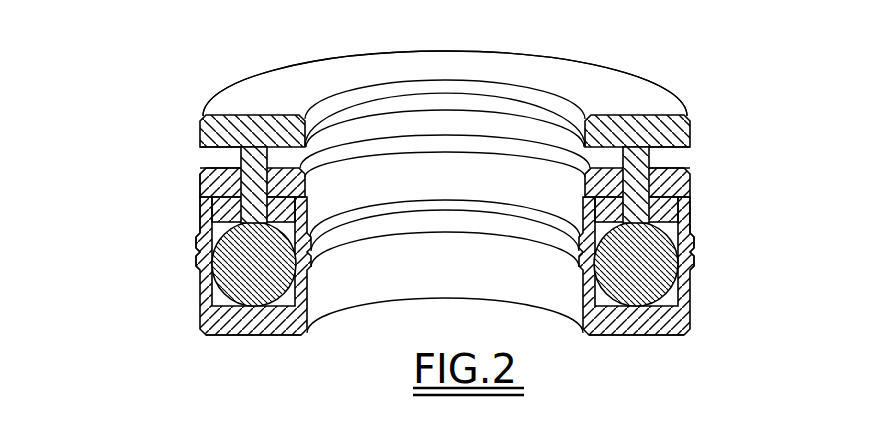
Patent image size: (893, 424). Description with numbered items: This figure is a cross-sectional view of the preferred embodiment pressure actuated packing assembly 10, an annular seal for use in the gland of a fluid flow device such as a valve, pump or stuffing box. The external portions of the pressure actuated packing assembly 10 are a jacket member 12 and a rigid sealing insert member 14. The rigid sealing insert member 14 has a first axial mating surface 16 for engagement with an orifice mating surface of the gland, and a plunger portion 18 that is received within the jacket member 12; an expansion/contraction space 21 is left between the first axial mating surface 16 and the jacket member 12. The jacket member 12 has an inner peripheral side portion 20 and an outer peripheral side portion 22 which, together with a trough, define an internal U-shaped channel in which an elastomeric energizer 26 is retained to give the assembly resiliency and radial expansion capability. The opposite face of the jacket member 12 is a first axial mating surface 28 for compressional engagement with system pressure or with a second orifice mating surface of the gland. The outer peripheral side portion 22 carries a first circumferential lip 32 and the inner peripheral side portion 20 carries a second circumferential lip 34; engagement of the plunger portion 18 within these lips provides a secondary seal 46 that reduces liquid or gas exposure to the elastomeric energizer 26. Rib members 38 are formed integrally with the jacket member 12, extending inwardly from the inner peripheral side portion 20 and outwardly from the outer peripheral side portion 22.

The pressure actuated packing assembly 10 is at (352, 42).
The jacket member 12 is at (198, 252).
The rigid sealing insert member 14 is at (200, 131).
The first axial mating surface 16 is at (266, 100).
The plunger portion 18 is at (200, 199).
The inner peripheral side portion 20 is at (306, 209).
The expansion/contraction space 21 is at (234, 157).
The outer peripheral side portion 22 is at (198, 230).
The elastomeric energizer 26 is at (220, 301).
The first axial mating surface 28 is at (268, 336).
The first circumferential lip 32 is at (200, 180).
The second circumferential lip 34 is at (503, 152).
The rib members 38 is at (196, 264).
The secondary seal 46 is at (585, 162).